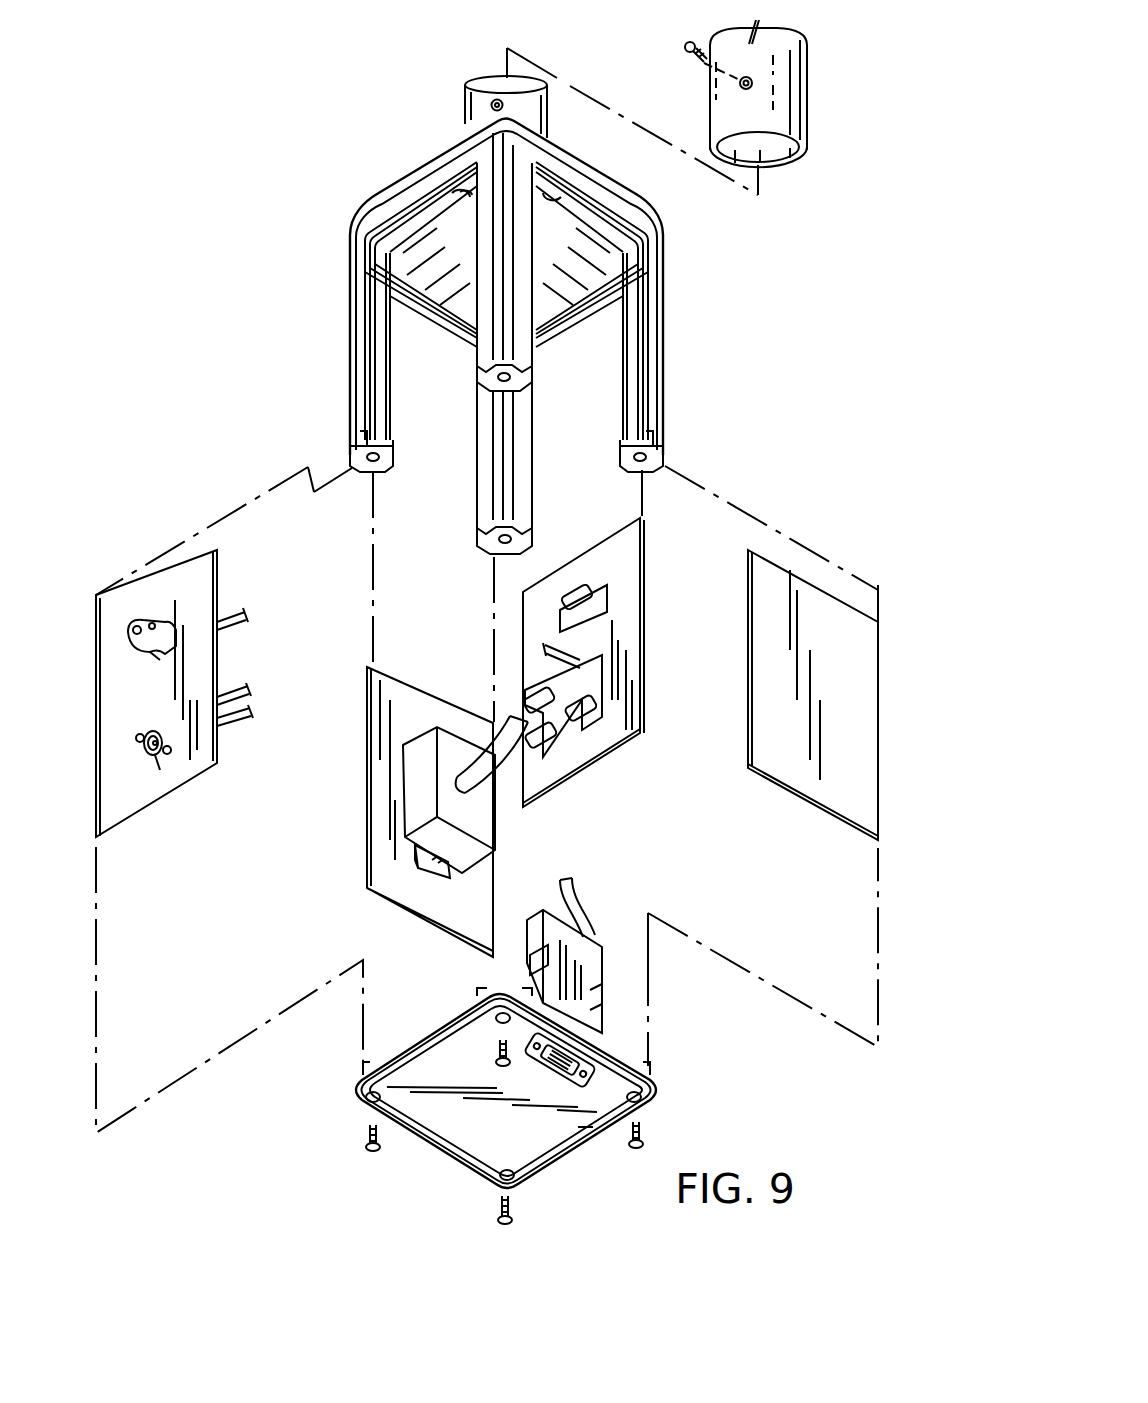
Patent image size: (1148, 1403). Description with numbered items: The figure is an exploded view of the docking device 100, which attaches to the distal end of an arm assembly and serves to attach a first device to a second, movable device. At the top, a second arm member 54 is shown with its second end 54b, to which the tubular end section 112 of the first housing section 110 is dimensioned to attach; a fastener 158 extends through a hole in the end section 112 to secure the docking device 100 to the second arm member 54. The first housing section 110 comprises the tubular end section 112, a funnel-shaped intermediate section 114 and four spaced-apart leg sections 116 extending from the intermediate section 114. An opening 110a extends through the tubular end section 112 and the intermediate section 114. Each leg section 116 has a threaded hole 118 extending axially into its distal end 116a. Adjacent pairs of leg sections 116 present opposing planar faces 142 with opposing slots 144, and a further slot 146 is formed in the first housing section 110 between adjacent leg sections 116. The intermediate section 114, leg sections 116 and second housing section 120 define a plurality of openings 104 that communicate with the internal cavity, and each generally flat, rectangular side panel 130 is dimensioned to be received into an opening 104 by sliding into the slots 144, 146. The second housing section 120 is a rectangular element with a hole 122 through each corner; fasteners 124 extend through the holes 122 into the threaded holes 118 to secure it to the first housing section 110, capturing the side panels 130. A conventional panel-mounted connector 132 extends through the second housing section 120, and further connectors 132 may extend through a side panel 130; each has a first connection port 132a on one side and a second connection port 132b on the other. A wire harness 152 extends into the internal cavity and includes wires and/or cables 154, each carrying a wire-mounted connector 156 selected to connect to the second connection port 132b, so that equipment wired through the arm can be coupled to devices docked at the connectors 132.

The docking device 100 is at (250, 185).
The second arm member 54 is at (812, 76).
The second end of second arm member 54b is at (802, 137).
The fastener 158 is at (686, 60).
The tubular end section 112 is at (464, 112).
The first housing section 110 is at (670, 236).
The intermediate section 114 is at (425, 175).
The opening 110a is at (458, 200).
The slot 146 is at (366, 235).
The planar face 142 is at (382, 265).
The slot 144 is at (370, 380).
The leg section 116 is at (350, 328).
The distal end of leg section 116a is at (366, 438).
The opening 104 is at (410, 328).
The threaded hole 118 is at (378, 464).
The side panel 130 is at (130, 805).
The connector 132 is at (140, 600).
The first connection port 132a is at (146, 660).
The second connection port 132b is at (604, 580).
The wire or cable 154 is at (233, 614).
The wire harness 152 is at (586, 882).
The wire-mounted connector 156 is at (410, 797).
The second housing section 120 is at (420, 1145).
The hole 122 is at (496, 1016).
The fastener 124 is at (497, 1052).